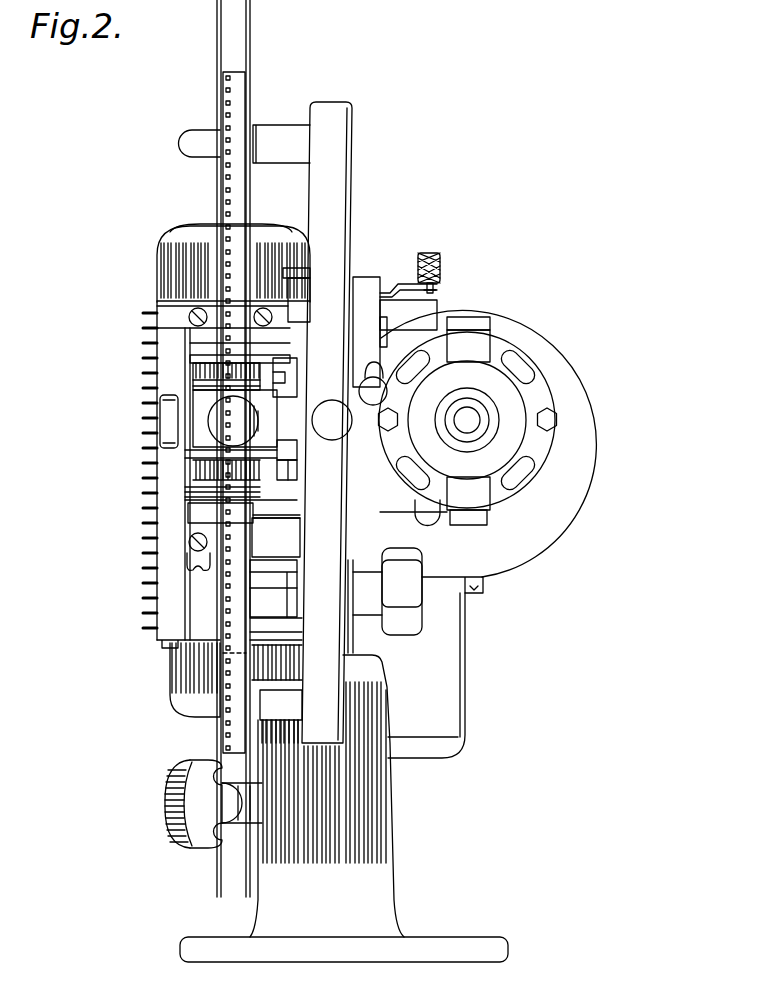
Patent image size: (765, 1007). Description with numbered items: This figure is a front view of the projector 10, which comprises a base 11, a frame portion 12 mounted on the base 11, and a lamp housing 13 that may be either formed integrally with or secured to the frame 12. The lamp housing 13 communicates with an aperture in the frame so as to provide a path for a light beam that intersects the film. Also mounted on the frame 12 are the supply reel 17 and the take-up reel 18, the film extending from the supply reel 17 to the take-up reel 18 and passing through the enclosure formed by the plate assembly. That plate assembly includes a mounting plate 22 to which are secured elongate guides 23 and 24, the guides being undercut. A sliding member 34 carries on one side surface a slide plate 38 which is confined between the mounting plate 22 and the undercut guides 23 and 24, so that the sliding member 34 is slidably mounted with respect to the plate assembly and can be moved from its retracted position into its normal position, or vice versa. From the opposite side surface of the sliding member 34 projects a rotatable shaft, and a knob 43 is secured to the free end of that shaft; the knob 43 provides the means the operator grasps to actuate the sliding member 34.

The projector 10 is at (438, 225).
The base 11 is at (392, 855).
The frame portion 12 is at (400, 330).
The lamp housing 13 is at (150, 362).
The supply reel 17 is at (250, 60).
The take-up reel 18 is at (223, 731).
The mounting plate 22 is at (297, 480).
The elongate guide 23 is at (281, 367).
The elongate guide 24 is at (288, 478).
The sliding member 34 is at (270, 413).
The slide plate 38 is at (288, 447).
The knob 43 is at (165, 428).